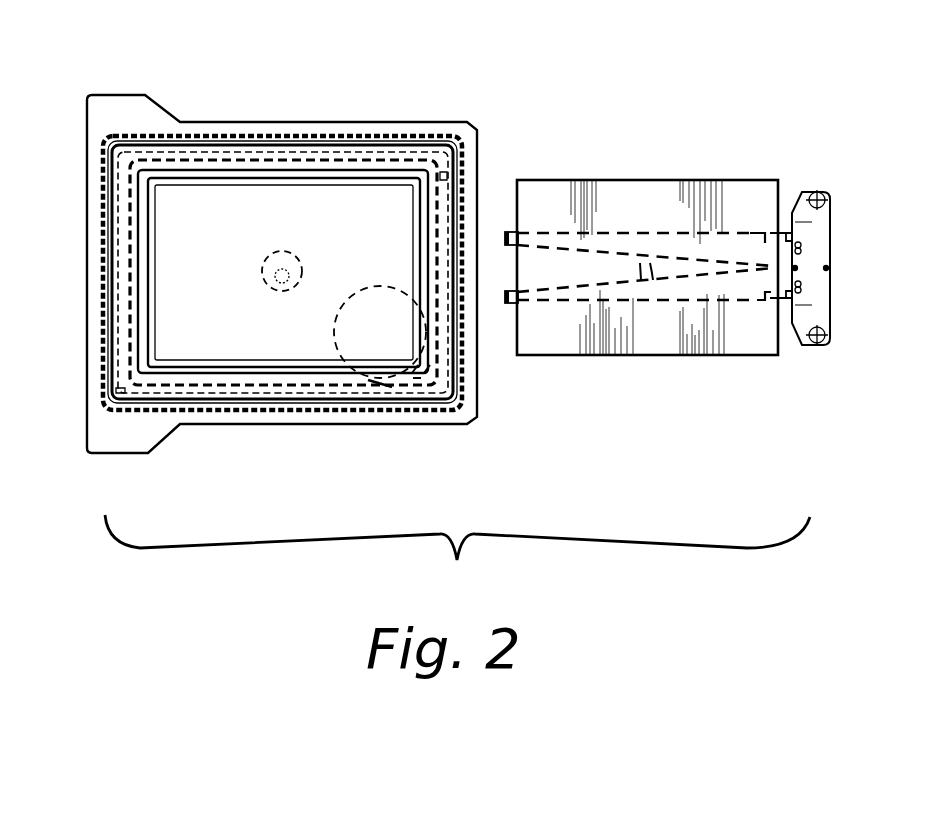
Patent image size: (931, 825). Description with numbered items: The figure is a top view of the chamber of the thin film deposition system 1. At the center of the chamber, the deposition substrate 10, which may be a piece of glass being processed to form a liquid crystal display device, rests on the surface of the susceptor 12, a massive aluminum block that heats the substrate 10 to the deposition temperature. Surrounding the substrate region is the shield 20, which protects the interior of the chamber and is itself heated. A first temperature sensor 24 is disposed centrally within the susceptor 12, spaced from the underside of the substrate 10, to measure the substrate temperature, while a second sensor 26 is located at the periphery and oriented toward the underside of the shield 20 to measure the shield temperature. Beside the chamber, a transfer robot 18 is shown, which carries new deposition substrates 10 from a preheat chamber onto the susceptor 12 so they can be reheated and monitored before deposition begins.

The system 1 is at (260, 466).
The deposition substrate 10 is at (350, 205).
The susceptor 12 is at (148, 275).
The transfer robot 18 is at (672, 233).
The shield 20 is at (107, 173).
The first temperature sensor 24 is at (276, 256).
The second sensor 26 is at (102, 377).